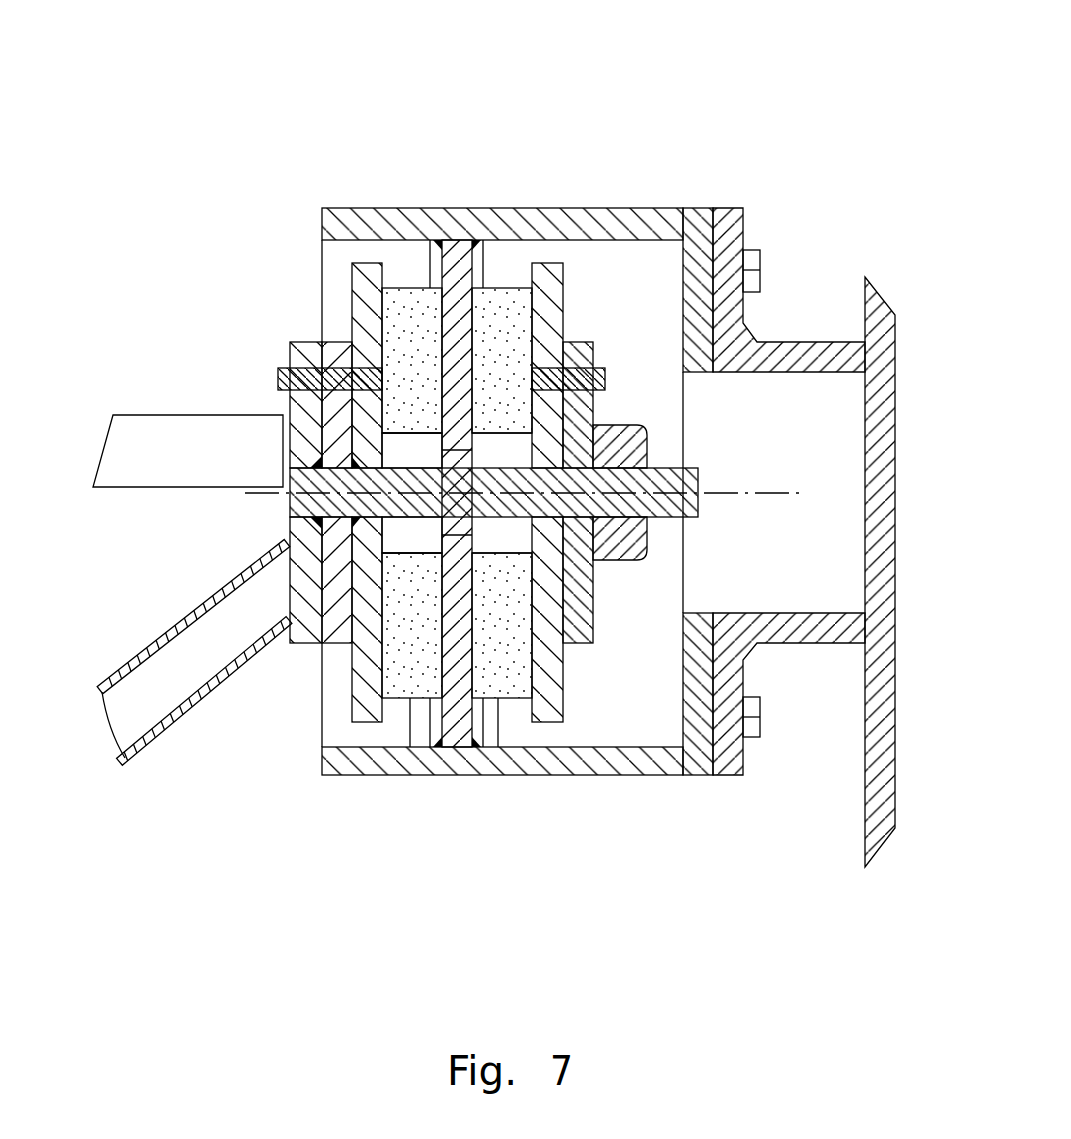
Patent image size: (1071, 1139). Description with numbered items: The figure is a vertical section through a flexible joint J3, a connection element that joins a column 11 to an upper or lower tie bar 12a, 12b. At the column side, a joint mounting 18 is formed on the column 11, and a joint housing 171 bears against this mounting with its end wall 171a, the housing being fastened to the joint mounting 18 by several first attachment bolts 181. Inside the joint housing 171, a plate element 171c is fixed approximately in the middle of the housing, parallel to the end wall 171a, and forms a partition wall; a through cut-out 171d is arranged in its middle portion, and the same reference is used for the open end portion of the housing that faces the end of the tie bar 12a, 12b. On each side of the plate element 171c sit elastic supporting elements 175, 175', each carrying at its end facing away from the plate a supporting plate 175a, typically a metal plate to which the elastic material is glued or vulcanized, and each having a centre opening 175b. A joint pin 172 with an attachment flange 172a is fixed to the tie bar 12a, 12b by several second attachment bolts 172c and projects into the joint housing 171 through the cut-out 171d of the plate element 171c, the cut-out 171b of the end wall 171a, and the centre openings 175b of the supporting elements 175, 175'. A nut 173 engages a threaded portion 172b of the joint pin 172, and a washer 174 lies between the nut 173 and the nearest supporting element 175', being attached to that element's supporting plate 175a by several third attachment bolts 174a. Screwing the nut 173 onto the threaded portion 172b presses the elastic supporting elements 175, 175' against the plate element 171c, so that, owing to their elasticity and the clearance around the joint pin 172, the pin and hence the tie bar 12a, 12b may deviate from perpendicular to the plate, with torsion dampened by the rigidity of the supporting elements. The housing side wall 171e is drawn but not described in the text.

The flexible joint J3 is at (716, 106).
The column 11 is at (895, 350).
The upper tie bar 12a is at (217, 488).
The lower tie bar 12b is at (194, 652).
The joint mounting 18 is at (750, 767).
The first attachment bolts 181 is at (760, 730).
The joint housing 171 is at (438, 176).
The end wall 171a is at (683, 305).
The cut-out 171b is at (713, 403).
The plate element 171c is at (443, 272).
The cut-out 171d is at (442, 462).
The housing side wall 171e is at (322, 735).
The joint pin 172 is at (503, 517).
The attachment flange 172a is at (335, 645).
The threaded portion 172b is at (662, 520).
The second attachment bolts 172c is at (278, 379).
The nut 173 is at (647, 448).
The washer 174 is at (593, 627).
The third attachment bolts 174a is at (605, 378).
The elastic supporting element 175 is at (501, 598).
The elastic supporting element 175' is at (542, 582).
The supporting plate 175a is at (365, 722).
The centre opening 175b is at (412, 537).